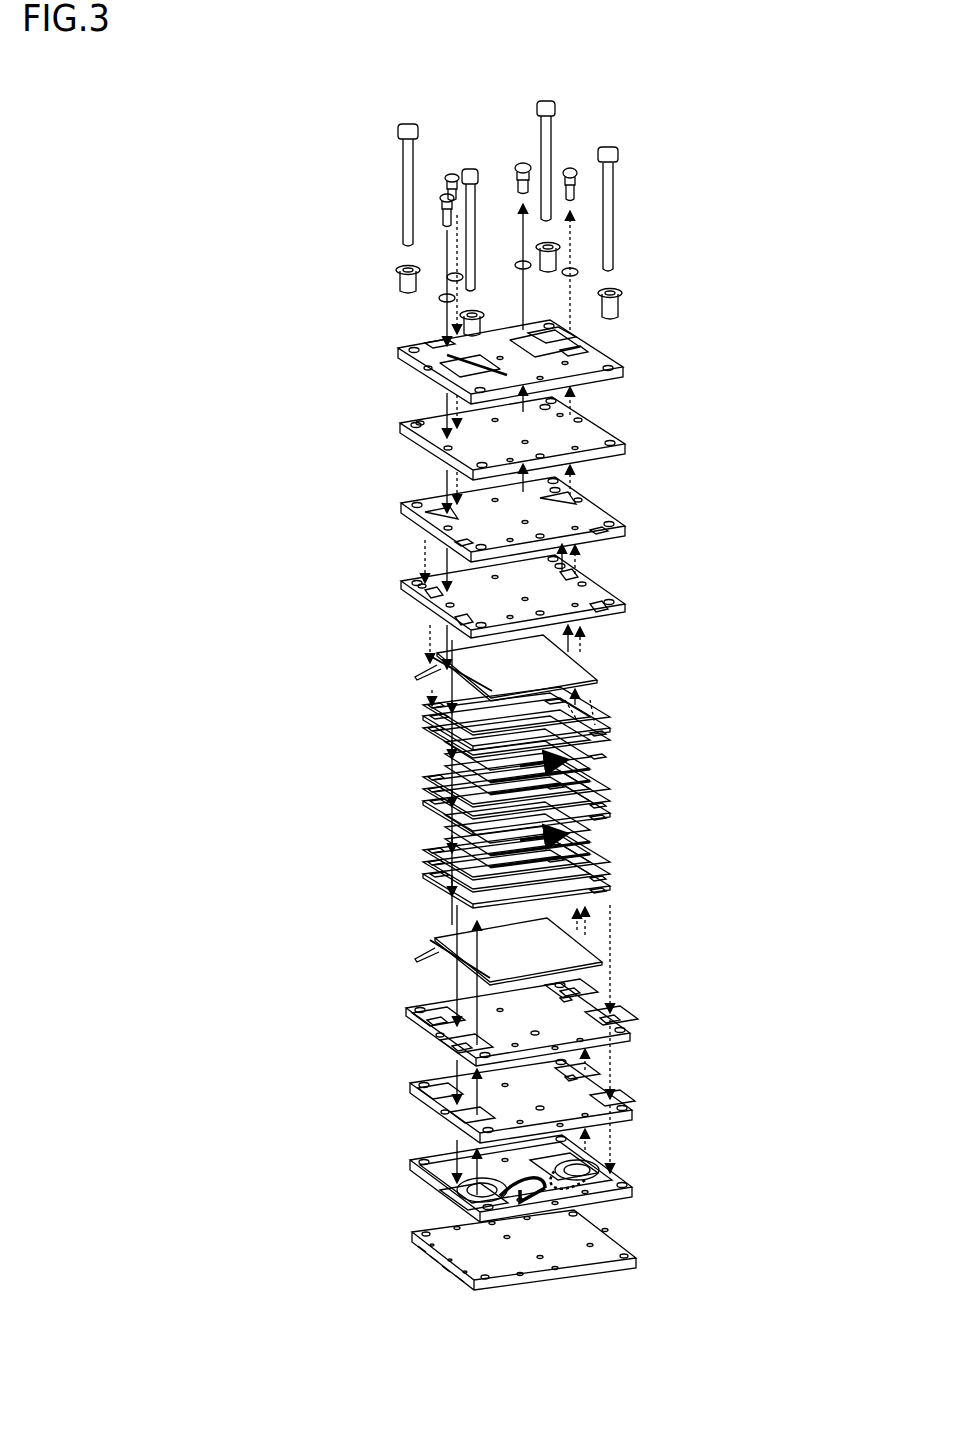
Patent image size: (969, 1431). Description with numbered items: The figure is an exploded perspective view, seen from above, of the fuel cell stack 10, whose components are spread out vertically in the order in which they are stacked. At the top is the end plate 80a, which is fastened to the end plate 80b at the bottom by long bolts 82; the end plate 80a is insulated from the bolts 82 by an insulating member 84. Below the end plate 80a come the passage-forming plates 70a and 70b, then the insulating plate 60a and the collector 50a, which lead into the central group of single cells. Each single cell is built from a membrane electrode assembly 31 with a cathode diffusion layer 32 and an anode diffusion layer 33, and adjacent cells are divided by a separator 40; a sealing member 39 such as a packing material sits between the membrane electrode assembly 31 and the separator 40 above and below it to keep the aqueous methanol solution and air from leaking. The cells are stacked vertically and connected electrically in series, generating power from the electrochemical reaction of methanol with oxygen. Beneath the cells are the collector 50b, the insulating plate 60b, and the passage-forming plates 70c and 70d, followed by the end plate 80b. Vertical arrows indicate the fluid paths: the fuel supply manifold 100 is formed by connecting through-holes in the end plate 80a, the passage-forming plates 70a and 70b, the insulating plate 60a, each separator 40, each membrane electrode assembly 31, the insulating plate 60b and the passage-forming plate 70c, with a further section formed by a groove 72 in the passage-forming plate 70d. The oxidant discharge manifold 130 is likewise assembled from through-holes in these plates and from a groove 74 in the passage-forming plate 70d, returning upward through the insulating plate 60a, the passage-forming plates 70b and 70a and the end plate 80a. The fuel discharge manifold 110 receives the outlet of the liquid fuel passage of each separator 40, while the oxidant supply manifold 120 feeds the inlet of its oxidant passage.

The fuel cell stack 10 is at (535, 1346).
The membrane electrode assembly 31 is at (590, 769).
The cathode diffusion layer 32 is at (590, 757).
The anode diffusion layer 33 is at (590, 781).
The sealing member 39 is at (418, 708).
The separator 40 is at (612, 744).
The collector 50a is at (598, 678).
The collector 50b is at (605, 960).
The insulating plate 60a is at (626, 600).
The insulating plate 60b is at (634, 1030).
The passage-forming plate 70a is at (626, 440).
The passage-forming plate 70b is at (626, 520).
The passage-forming plate 70c is at (634, 1105).
The passage-forming plate 70d is at (634, 1180).
The groove 72 is at (472, 1192).
The groove 74 is at (590, 1172).
The end plate 80a is at (620, 366).
The end plate 80b is at (638, 1256).
The bolt 82 is at (617, 201).
The insulating member 84 is at (623, 293).
The fuel supply manifold 100 is at (424, 369).
The fuel discharge manifold 110 is at (576, 334).
The oxidant supply manifold 120 is at (432, 340).
The oxidant discharge manifold 130 is at (598, 356).